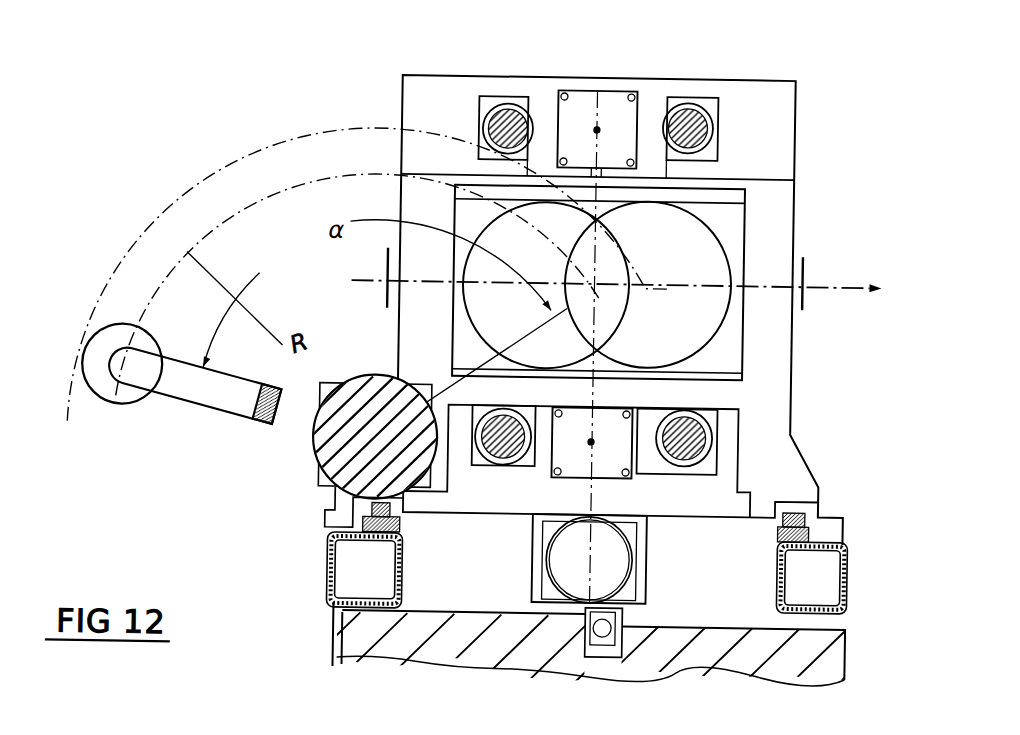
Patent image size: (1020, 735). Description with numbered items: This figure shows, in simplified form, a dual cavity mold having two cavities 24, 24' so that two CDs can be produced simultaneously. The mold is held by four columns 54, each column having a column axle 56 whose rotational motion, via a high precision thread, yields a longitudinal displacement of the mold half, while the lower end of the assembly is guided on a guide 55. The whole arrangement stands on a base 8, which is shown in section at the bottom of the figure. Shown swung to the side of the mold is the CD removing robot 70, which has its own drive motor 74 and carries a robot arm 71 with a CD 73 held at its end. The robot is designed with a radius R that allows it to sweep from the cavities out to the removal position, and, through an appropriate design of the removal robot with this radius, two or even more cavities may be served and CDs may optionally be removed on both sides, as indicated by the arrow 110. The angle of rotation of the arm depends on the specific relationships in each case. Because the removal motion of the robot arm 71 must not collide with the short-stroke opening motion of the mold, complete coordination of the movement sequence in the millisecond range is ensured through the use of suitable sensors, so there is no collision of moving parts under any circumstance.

The column 54 is at (598, 268).
The column axle 56 is at (615, 268).
The cavity 24 is at (546, 285).
The cavity 24' is at (648, 285).
The arrow 110 is at (622, 280).
The CD removing robot 70 is at (232, 162).
The CD 73 is at (83, 368).
The robot arm 71 is at (211, 412).
The drive motor 74 is at (298, 490).
The guide 55 is at (400, 516).
The base plate 8 is at (354, 650).